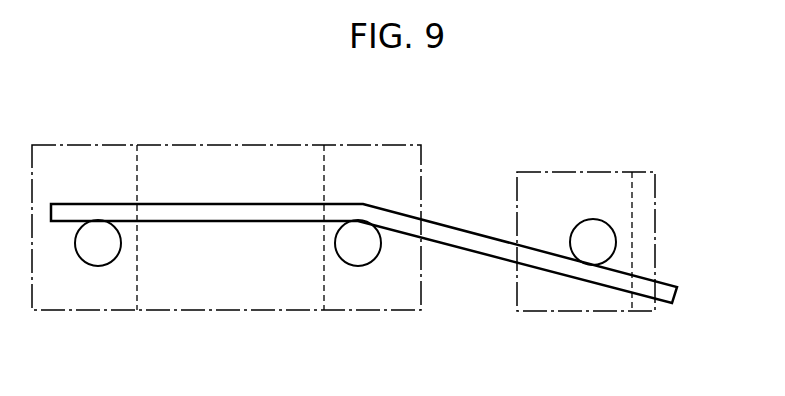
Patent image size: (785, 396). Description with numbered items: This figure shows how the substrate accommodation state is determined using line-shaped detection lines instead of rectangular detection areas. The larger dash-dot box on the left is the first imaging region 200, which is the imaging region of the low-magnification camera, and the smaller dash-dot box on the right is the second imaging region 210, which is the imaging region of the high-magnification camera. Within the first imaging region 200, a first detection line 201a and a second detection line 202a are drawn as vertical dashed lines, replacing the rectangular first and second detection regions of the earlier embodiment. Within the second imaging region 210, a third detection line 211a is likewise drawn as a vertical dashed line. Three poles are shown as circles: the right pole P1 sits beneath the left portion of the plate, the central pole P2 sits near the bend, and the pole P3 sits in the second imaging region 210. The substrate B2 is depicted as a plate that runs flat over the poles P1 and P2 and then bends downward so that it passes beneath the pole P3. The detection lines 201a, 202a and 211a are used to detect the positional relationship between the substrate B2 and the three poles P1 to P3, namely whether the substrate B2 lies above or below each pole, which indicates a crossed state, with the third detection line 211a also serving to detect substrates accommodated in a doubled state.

The first imaging region 200 is at (210, 143).
The first detection line 201a is at (137, 280).
The second detection line 202a is at (324, 280).
The second imaging region 210 is at (572, 170).
The third detection line 211a is at (632, 285).
The right pole P1 is at (98, 266).
The central pole P2 is at (363, 265).
The pole P3 is at (610, 226).
The substrate B2 is at (678, 296).